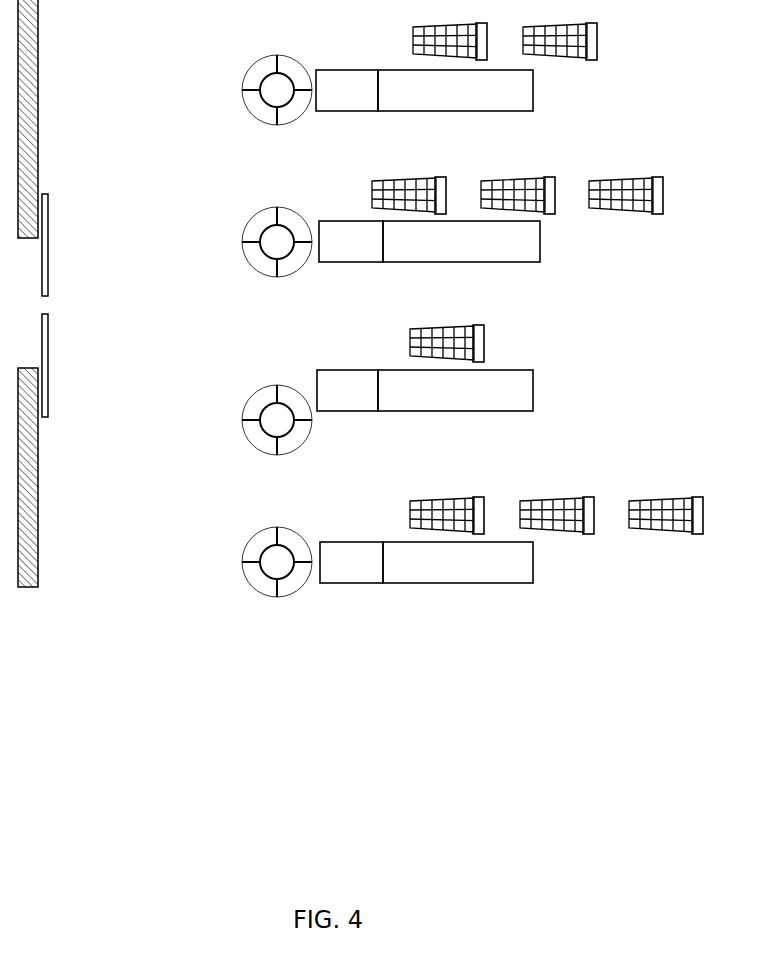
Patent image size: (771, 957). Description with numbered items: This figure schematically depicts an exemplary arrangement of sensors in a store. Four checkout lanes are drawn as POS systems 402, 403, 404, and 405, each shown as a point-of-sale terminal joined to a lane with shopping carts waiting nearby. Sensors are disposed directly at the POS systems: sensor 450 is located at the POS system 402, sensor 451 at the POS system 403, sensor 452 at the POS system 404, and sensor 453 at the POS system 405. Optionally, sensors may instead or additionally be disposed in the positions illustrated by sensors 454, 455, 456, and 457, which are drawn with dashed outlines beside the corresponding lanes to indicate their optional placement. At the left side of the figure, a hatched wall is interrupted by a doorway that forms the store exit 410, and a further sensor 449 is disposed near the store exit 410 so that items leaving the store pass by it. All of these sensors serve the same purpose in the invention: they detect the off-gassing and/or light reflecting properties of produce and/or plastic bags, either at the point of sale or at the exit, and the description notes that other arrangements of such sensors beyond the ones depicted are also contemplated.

The POS system 402 is at (553, 92).
The POS system 403 is at (550, 247).
The POS system 404 is at (545, 387).
The POS system 405 is at (545, 570).
The store exit 410 is at (66, 219).
The sensor 449 is at (74, 305).
The sensor 450 is at (361, 104).
The sensor 451 is at (363, 254).
The sensor 452 is at (362, 403).
The sensor 453 is at (363, 575).
The sensor 454 is at (277, 74).
The sensor 455 is at (277, 227).
The sensor 456 is at (277, 405).
The sensor 457 is at (277, 546).